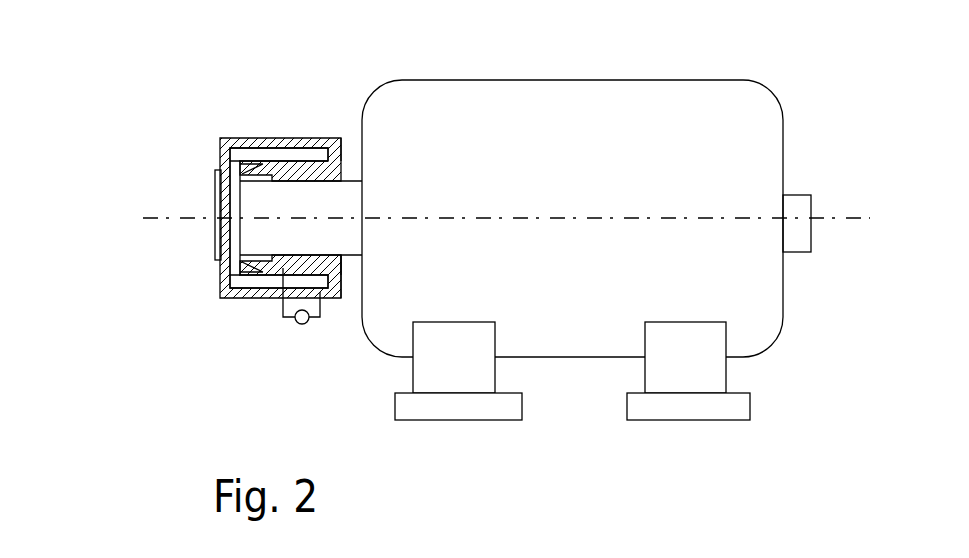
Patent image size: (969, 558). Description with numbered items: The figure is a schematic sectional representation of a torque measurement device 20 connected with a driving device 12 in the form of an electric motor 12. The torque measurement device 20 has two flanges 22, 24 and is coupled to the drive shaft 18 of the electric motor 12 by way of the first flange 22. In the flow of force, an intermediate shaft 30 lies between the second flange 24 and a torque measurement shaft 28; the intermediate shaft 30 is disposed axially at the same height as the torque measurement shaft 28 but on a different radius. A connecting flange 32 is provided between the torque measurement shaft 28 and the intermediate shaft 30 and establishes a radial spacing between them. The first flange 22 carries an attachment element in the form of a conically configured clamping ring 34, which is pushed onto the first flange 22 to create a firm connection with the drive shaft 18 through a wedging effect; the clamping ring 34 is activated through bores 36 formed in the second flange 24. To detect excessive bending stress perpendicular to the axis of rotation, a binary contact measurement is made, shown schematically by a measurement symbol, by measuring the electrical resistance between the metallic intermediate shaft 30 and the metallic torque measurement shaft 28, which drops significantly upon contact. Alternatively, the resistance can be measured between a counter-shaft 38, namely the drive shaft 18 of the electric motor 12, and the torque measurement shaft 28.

The driving device 12 is at (552, 100).
The drive shaft 18 is at (353, 250).
The torque measurement device 20 is at (257, 231).
The first flange 22 is at (254, 177).
The second flange 24 is at (222, 238).
The torque measurement shaft 28 is at (307, 165).
The intermediate shaft 30 is at (245, 145).
The connecting flange 32 is at (339, 140).
The clamping ring 34 is at (248, 164).
The bores 36 is at (228, 161).
The counter-shaft 38 is at (340, 206).